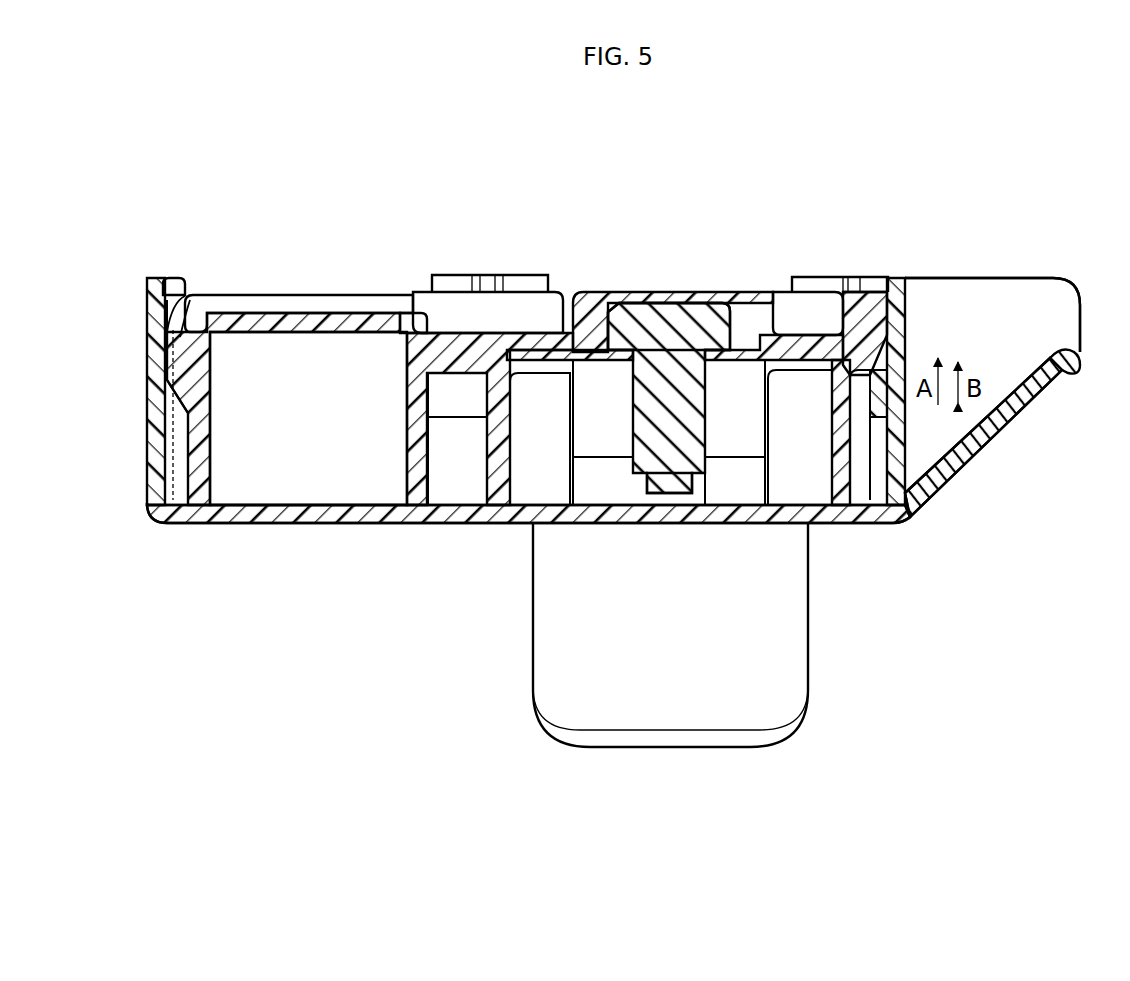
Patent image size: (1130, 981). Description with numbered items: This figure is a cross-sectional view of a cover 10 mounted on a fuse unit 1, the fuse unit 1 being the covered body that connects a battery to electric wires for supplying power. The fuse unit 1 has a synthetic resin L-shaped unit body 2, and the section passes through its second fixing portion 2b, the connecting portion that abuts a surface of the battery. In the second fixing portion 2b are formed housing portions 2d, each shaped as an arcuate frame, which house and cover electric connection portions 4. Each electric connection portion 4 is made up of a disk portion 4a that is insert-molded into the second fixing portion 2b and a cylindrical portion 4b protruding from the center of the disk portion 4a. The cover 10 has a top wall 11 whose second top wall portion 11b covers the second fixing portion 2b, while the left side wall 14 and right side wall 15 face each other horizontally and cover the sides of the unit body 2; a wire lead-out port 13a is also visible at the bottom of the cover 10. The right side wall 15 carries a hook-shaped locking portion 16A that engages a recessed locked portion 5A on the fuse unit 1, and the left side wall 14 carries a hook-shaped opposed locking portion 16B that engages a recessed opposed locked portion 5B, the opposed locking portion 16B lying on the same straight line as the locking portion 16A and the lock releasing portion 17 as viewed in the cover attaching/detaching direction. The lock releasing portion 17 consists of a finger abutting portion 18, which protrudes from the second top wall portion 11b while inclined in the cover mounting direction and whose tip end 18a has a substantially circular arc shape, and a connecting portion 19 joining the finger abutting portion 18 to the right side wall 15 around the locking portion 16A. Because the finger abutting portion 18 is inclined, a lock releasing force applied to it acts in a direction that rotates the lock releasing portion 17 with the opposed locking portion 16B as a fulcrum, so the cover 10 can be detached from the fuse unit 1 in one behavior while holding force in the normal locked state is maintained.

The fuse unit 1 is at (667, 248).
The unit body 2 is at (524, 390).
The second fixing portion 2b is at (697, 293).
The housing portion 2d is at (858, 470).
The electric connection portion 4 is at (685, 408).
The disk portion 4a is at (730, 302).
The cylindrical portion 4b is at (667, 494).
The locked portion 5A is at (852, 305).
The opposed locked portion 5B is at (184, 297).
The cover 10 is at (600, 422).
The top wall 11 is at (487, 527).
The second top wall portion 11b is at (258, 524).
The wire lead-out port 13a is at (652, 747).
The left side wall 14 is at (148, 418).
The right side wall 15 is at (905, 433).
The locking portion 16A is at (905, 294).
The opposed locking portion 16B is at (160, 327).
The lock releasing portion 17 is at (1054, 277).
The finger abutting portion 18 is at (997, 432).
The tip end 18a is at (1068, 348).
The connecting portion 19 is at (997, 297).